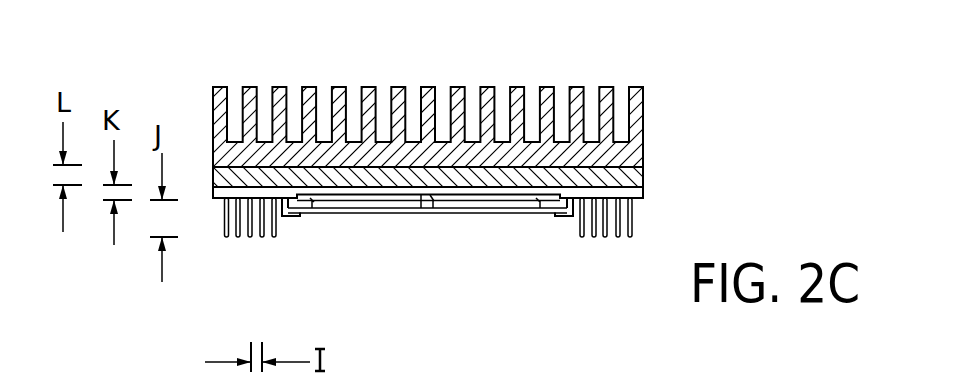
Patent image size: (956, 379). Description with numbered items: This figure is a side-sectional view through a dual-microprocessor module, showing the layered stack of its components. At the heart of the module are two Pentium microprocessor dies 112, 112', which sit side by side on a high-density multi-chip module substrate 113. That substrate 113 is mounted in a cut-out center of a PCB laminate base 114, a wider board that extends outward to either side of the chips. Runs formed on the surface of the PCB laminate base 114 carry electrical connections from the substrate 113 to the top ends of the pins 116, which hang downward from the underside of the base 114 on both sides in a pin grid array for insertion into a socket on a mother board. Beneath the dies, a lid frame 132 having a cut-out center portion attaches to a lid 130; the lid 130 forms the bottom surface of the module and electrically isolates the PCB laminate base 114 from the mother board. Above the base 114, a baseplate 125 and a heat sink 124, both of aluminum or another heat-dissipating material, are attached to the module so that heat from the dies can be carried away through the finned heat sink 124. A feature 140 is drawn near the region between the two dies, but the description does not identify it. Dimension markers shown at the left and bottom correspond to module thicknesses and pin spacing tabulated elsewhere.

The heat sink 124 is at (640, 100).
The baseplate 125 is at (642, 175).
The PCB laminate base 114 is at (213, 189).
The pins 116 is at (228, 237).
The lid frame 132 is at (288, 216).
The lid 130 is at (306, 213).
The MCM-D substrate 113 is at (382, 194).
The microprocessor die 112' is at (365, 228).
The microprocessor die 112 is at (486, 234).
The gap between chips 140 is at (422, 202).